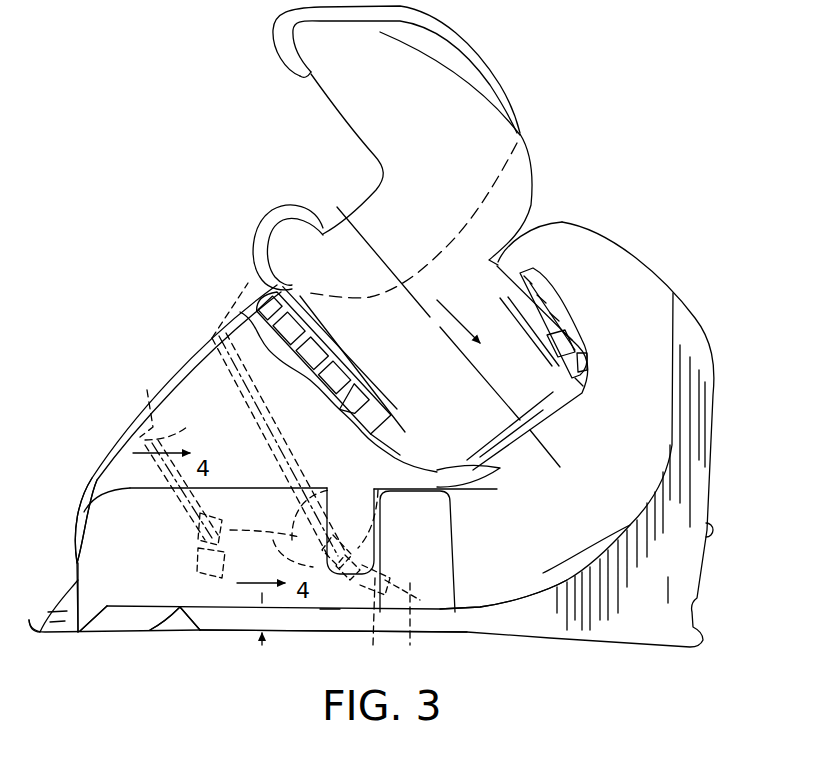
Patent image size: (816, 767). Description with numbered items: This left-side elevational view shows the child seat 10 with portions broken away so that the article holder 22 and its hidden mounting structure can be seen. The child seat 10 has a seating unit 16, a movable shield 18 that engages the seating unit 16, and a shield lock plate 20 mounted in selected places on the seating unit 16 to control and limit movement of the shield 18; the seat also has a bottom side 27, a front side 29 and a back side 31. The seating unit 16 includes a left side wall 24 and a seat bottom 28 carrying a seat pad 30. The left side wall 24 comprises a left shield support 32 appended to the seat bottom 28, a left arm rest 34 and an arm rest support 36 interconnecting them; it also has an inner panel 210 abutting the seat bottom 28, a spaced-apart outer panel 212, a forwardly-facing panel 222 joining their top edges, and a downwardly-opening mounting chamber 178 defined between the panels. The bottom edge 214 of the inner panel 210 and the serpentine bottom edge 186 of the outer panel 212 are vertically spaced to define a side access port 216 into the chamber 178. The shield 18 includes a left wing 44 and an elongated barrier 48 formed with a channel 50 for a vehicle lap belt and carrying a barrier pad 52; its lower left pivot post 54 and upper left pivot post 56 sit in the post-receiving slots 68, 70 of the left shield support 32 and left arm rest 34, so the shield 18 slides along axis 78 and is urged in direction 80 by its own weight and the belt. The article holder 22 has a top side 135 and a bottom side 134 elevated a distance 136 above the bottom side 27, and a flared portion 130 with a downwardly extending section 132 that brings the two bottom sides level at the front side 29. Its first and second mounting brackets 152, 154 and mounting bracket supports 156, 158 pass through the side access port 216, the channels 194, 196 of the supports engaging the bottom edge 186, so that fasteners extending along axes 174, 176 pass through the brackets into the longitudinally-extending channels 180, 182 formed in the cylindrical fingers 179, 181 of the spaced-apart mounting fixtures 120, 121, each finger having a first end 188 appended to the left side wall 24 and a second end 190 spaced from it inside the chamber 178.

The child seat 10 is at (648, 224).
The seating unit 16 is at (76, 400).
The movable shield 18 is at (284, 76).
The shield lock plate 20 is at (357, 357).
The article holder 22 is at (468, 568).
The left side wall 24 is at (504, 615).
The bottom side 27 is at (154, 633).
The seat bottom 28 is at (62, 552).
The front side 29 is at (28, 622).
The seat pad 30 is at (77, 508).
The back side 31 is at (697, 600).
The left shield support 32 is at (170, 372).
The left arm rest 34 is at (585, 275).
The arm rest support 36 is at (572, 528).
The left wing 44 is at (414, 376).
The elongated barrier 48 is at (355, 165).
The channel 50 is at (320, 192).
The barrier pad 52 is at (482, 54).
The lower left pivot post 54 is at (420, 450).
The upper left pivot post 56 is at (587, 368).
The lower left post-receiving slot 68 is at (390, 420).
The upper left post-receiving slot 70 is at (541, 318).
The axis 78 is at (405, 262).
The direction 80 is at (458, 320).
The mounting fixture 120 is at (170, 437).
The mounting fixture 121 is at (228, 378).
The flared portion 130 is at (88, 562).
The downwardly extending section 132 is at (77, 634).
The bottom side 134 is at (84, 631).
The top side 135 is at (227, 480).
The distance 136 is at (263, 632).
The first mounting bracket 152 is at (210, 552).
The second mounting bracket 154 is at (377, 548).
The first mounting bracket support 156 is at (202, 570).
The second mounting bracket support 158 is at (387, 570).
The axis 174 is at (145, 437).
The axis 176 is at (213, 338).
The mounting chamber 178 is at (292, 492).
The finger 179 is at (180, 500).
The channel 180 is at (252, 514).
The finger 181 is at (271, 449).
The channel 182 is at (330, 470).
The bottom edge 186 is at (426, 626).
The first end 188 is at (153, 394).
The second end 190 is at (308, 550).
The channel 194 is at (284, 557).
The channel 196 is at (373, 623).
The inner panel 210 is at (468, 622).
The outer panel 212 is at (543, 573).
The bottom edge 214 is at (230, 631).
The side access port 216 is at (427, 602).
The forwardly-facing panel 222 is at (130, 420).